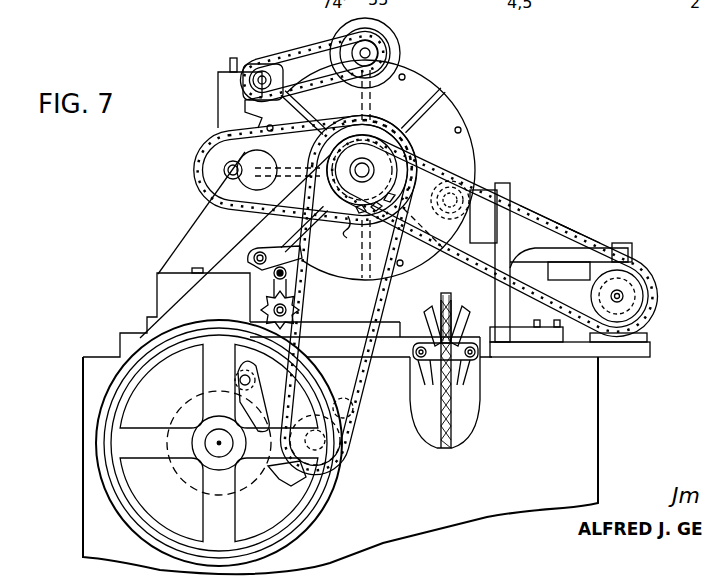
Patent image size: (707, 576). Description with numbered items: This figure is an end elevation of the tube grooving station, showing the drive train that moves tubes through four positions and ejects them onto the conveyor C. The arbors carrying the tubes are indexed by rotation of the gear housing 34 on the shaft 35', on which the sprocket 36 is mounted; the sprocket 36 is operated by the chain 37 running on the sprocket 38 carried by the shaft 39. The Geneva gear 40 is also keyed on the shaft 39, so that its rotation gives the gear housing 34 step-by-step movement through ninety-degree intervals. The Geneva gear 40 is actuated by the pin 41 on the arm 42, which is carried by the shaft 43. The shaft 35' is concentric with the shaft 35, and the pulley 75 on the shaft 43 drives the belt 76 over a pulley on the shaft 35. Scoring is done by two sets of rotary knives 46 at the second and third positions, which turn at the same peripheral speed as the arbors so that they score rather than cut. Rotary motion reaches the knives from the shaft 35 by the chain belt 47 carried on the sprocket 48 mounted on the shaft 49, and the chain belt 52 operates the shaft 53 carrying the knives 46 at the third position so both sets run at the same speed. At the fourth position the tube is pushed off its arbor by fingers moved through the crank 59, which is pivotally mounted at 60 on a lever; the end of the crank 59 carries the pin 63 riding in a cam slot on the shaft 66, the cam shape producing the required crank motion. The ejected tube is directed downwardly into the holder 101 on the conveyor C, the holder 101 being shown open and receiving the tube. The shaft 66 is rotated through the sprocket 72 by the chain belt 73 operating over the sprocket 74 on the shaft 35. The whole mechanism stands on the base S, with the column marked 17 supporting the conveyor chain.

The stand base S is at (598, 393).
The conveyor C is at (452, 393).
The post 17 is at (445, 300).
The gear housing 34 is at (425, 80).
The shaft 35 is at (386, 163).
The shaft 35' is at (357, 143).
The sprocket 36 is at (353, 223).
The chain 37 is at (297, 328).
The sprocket 38 is at (347, 406).
The shaft 39 is at (332, 438).
The Geneva gear 40 is at (290, 480).
The pin 41 is at (236, 379).
The arm 42 is at (242, 398).
The shaft 43 is at (213, 446).
The rotary knives 46 is at (398, 50).
The chain belt 47 is at (226, 117).
The sprocket 48 is at (215, 162).
The shaft 49 is at (226, 171).
The chain belt 52 is at (320, 55).
The shaft 53 is at (376, 34).
The crank 59 is at (520, 262).
The pivot 60 is at (565, 234).
The pin 63 is at (623, 246).
The shaft 66 is at (622, 299).
The sprocket 72 is at (642, 290).
The chain belt 73 is at (548, 224).
The sprocket 74 is at (418, 151).
The pulley 75 is at (333, 498).
The belt 76 is at (234, 256).
The holder 101 is at (468, 335).